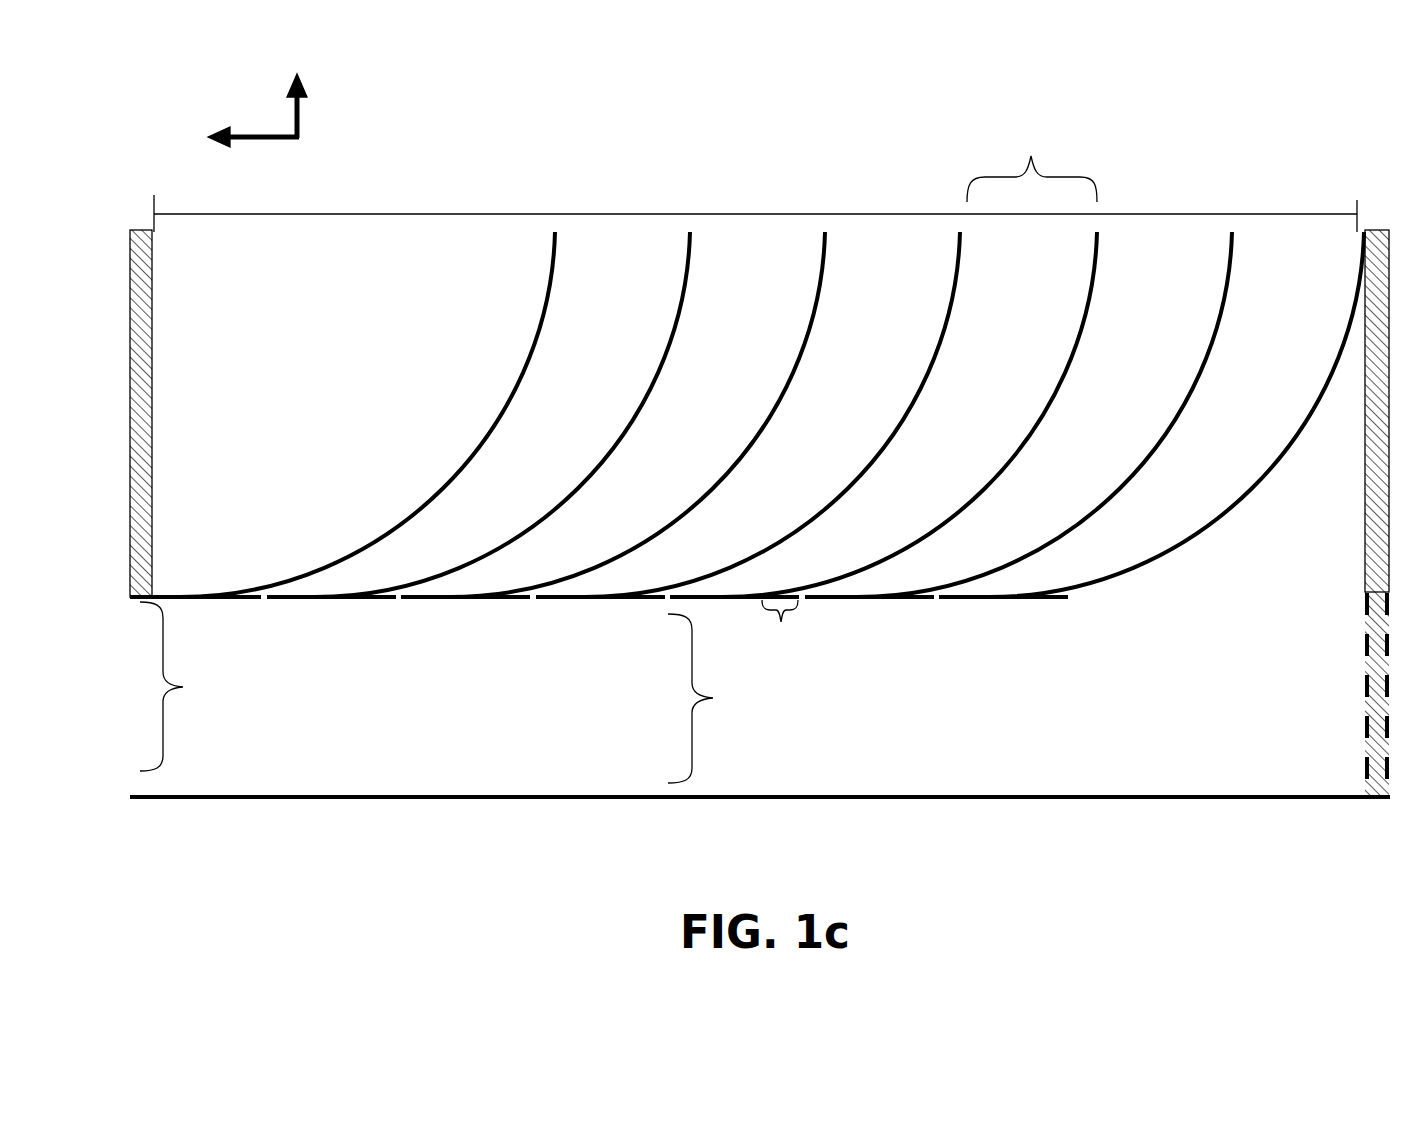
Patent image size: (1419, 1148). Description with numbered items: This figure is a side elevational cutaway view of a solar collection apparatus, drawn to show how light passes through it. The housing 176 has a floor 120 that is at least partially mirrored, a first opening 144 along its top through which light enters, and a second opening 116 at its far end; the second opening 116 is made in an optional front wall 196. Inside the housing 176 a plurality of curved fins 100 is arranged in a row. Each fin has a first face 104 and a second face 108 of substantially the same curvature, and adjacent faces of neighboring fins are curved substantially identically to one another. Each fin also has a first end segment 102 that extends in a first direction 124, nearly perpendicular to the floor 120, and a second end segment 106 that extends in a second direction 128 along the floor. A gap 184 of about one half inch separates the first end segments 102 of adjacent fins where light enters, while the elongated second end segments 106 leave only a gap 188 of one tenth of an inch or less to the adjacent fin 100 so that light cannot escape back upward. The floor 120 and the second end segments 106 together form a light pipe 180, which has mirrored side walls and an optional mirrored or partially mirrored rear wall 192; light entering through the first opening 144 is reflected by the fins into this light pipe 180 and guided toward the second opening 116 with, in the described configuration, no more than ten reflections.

The fins 100 is at (747, 398).
The first end segment 102 is at (545, 381).
The first face 104 is at (541, 413).
The second end segment 106 is at (399, 609).
The second face 108 is at (668, 313).
The second opening 116 is at (192, 686).
The floor 120 is at (905, 775).
The first direction 124 is at (312, 114).
The second direction 128 is at (258, 114).
The first opening 144 is at (1214, 198).
The housing 176 is at (1340, 562).
The light pipe 180 is at (725, 698).
The gap 184 is at (1032, 160).
The gap 188 is at (776, 632).
The rear wall 192 is at (1340, 722).
The front wall 196 is at (172, 432).